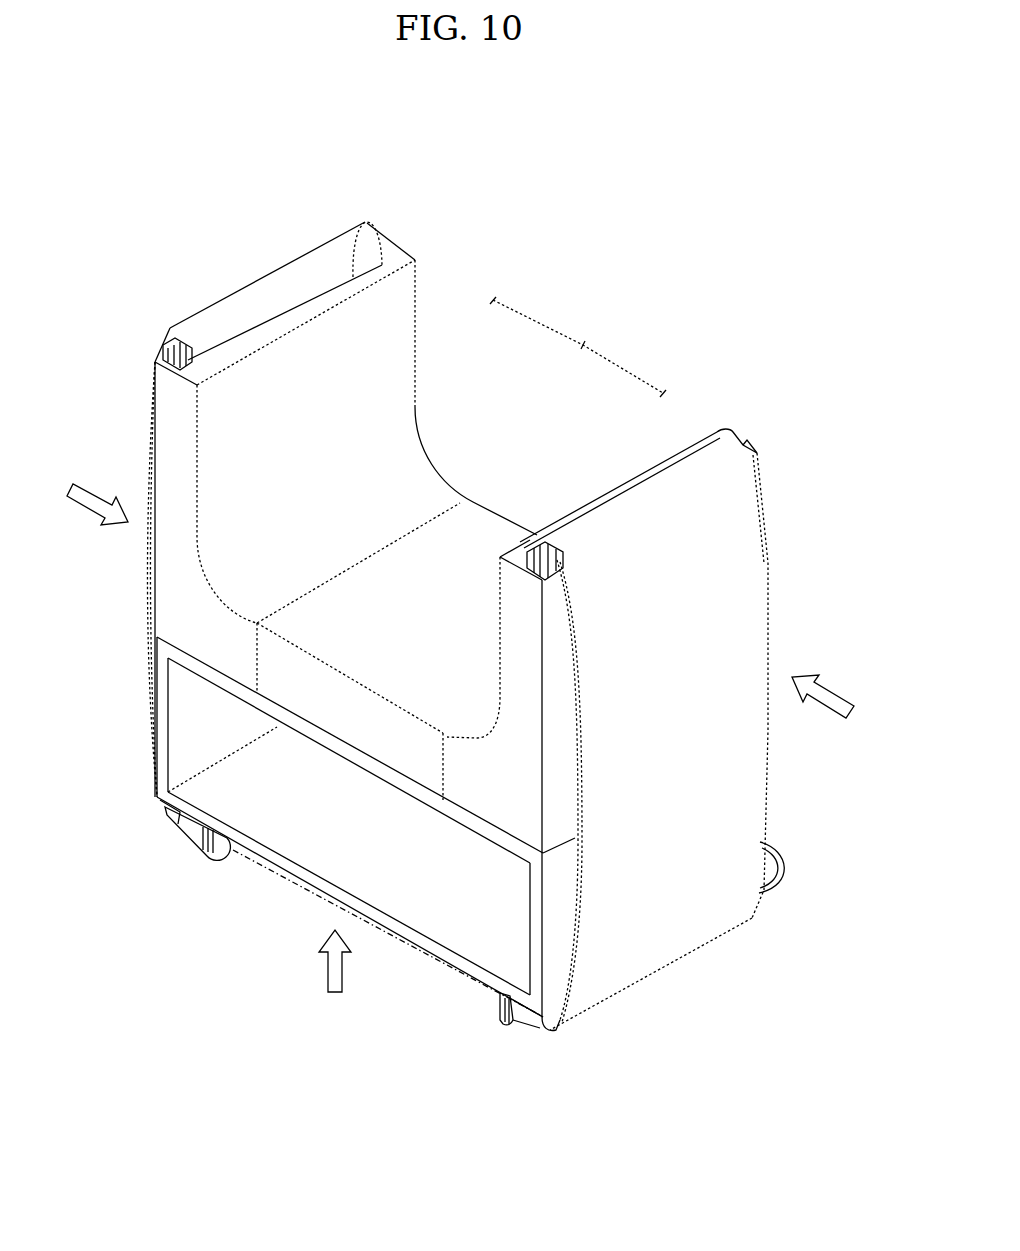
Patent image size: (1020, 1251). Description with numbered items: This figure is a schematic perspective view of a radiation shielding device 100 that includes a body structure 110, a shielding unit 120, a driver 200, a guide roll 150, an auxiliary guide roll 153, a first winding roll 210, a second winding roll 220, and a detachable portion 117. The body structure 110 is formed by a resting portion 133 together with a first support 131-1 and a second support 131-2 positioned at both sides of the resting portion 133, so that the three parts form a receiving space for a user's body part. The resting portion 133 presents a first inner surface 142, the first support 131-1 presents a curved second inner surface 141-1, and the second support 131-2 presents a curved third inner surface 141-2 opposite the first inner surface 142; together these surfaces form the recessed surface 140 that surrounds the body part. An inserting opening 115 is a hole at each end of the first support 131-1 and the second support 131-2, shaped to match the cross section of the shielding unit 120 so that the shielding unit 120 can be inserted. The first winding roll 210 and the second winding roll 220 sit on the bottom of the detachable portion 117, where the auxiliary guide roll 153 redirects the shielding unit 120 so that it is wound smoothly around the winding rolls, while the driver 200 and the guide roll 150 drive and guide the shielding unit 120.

The radiation shielding device 100 is at (683, 245).
The body structure 110 is at (826, 1031).
The inserting opening 115 is at (364, 222).
The detachable portion 117 is at (417, 795).
The shielding unit 120 is at (768, 567).
The first support 131-1 is at (197, 620).
The second support 131-2 is at (497, 793).
The resting portion 133 is at (323, 710).
The recessed surface 140 is at (578, 347).
The second inner surface 141-1 is at (375, 382).
The third inner surface 141-2 is at (588, 512).
The first inner surface 142 is at (490, 540).
The guide roll 150 is at (165, 340).
The auxiliary guide roll 153 is at (170, 817).
The driver 200 is at (787, 870).
The first winding roll 210 is at (503, 1027).
The second winding roll 220 is at (237, 850).